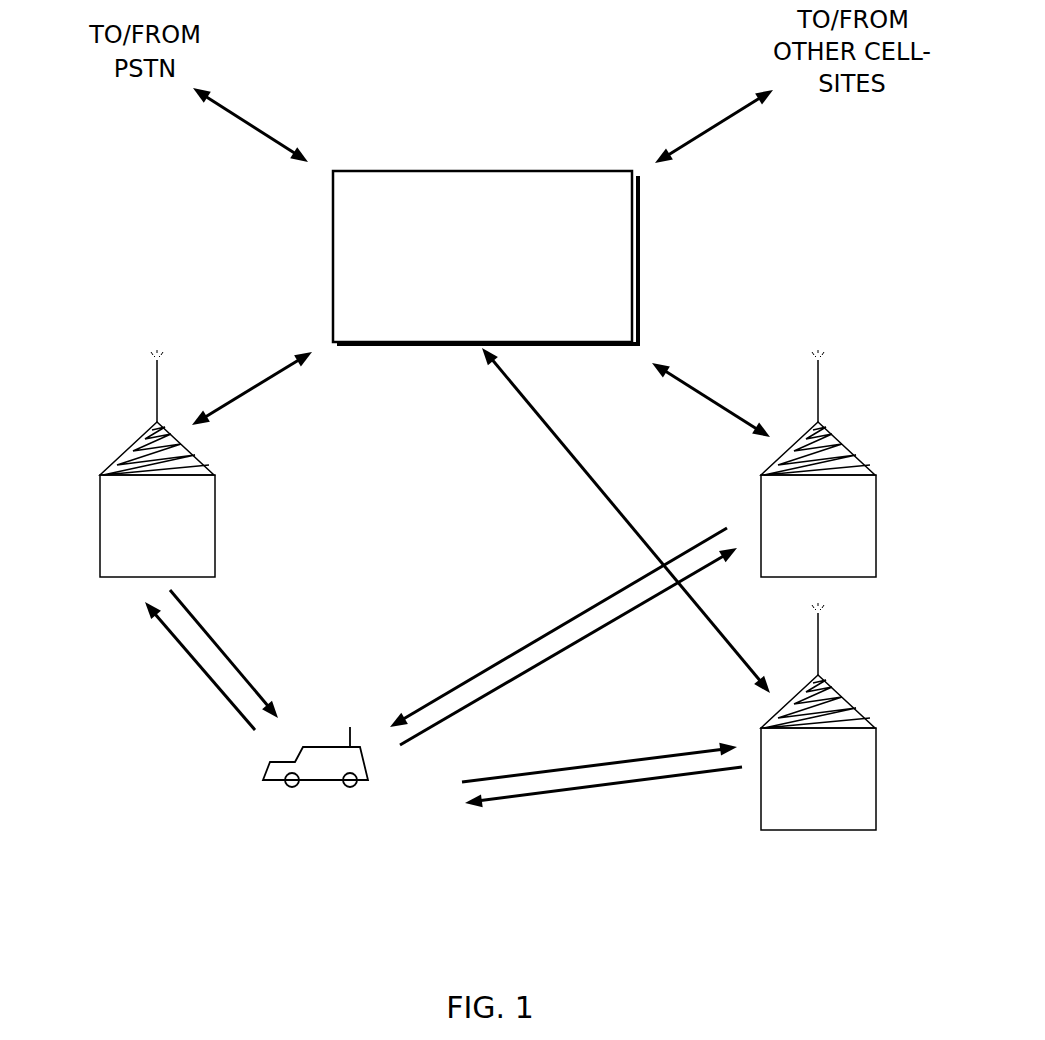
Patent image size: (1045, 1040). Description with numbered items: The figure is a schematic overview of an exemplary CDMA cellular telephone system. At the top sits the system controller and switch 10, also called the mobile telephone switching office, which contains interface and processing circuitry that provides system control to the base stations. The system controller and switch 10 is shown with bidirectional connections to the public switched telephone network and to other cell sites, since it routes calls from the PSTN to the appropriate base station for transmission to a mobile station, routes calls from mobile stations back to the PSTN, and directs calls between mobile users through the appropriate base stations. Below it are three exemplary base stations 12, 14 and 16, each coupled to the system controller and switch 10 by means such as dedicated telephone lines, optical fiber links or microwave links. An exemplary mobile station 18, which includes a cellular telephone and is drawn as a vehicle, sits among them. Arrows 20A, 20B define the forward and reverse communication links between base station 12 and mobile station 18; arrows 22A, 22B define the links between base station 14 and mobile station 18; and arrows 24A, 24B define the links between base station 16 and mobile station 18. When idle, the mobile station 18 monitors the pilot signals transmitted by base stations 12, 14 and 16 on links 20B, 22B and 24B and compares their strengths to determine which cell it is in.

The system controller and switch 10 is at (483, 171).
The base station 12 is at (127, 450).
The base station 14 is at (852, 450).
The base station 16 is at (852, 703).
The mobile station 18 is at (323, 785).
The communication link 20A is at (202, 670).
The communication link 20B is at (225, 648).
The communication link 22A is at (580, 642).
The communication link 22B is at (570, 617).
The communication link 24A is at (572, 760).
The communication link 24B is at (573, 790).